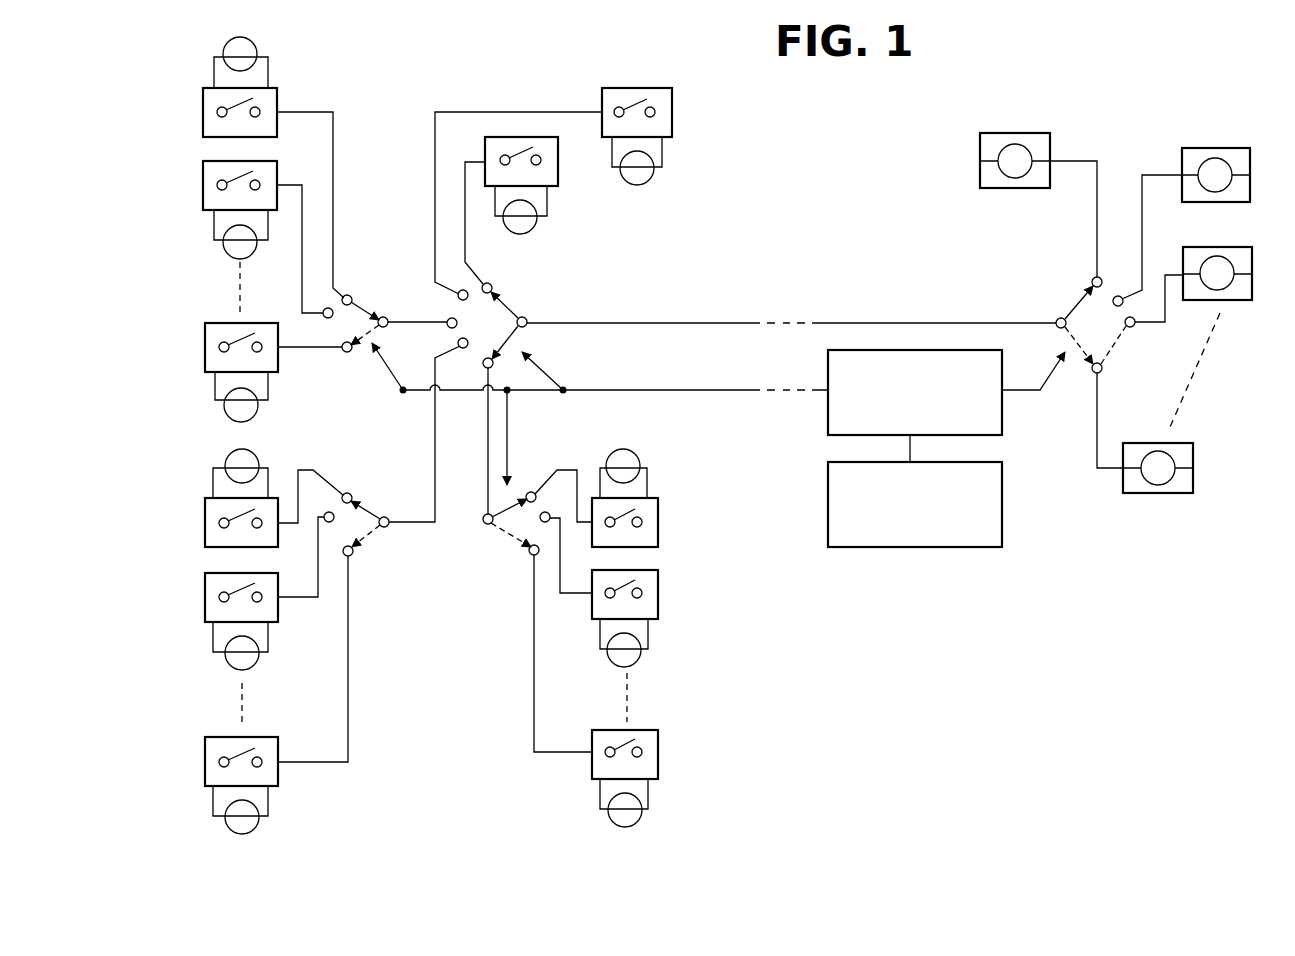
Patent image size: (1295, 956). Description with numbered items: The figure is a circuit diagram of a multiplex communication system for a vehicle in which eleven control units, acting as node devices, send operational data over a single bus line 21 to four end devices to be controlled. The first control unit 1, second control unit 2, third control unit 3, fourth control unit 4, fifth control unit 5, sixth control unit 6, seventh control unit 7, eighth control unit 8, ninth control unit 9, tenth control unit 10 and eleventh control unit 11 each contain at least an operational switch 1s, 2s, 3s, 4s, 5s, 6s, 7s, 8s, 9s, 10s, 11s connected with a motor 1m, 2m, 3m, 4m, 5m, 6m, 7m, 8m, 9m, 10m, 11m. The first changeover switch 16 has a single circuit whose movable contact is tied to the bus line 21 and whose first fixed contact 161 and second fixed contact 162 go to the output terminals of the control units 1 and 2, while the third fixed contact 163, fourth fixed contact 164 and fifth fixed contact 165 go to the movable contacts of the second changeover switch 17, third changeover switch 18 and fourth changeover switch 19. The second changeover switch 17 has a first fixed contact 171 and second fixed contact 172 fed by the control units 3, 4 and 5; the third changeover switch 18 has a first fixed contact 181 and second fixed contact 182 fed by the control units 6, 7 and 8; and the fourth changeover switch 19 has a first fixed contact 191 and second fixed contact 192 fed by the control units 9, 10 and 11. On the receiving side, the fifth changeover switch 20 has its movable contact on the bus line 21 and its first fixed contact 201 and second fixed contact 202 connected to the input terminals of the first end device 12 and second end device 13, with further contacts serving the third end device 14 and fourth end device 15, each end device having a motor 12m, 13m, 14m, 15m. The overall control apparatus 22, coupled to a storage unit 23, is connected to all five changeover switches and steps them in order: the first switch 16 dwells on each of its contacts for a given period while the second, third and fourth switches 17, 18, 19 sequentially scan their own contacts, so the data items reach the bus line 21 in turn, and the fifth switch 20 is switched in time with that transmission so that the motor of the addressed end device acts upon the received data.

The first control unit 1 is at (576, 169).
The operational switch 1s is at (640, 90).
The motor 1m is at (648, 178).
The second control unit 2 is at (521, 202).
The operational switch 2s is at (490, 148).
The motor 2m is at (530, 222).
The third control unit 3 is at (248, 164).
The operational switch 3s is at (210, 116).
The motor 3m is at (226, 53).
The fourth control unit 4 is at (237, 224).
The operational switch 4s is at (210, 190).
The motor 4m is at (226, 246).
The fifth control unit 5 is at (249, 361).
The operational switch 5s is at (210, 362).
The motor 5m is at (228, 412).
The sixth control unit 6 is at (250, 502).
The operational switch 6s is at (210, 516).
The motor 6m is at (226, 462).
The seventh control unit 7 is at (238, 604).
The operational switch 7s is at (208, 612).
The motor 7m is at (228, 660).
The eighth control unit 8 is at (251, 702).
The operational switch 8s is at (210, 752).
The motor 8m is at (228, 822).
The ninth control unit 9 is at (626, 483).
The operational switch 9s is at (636, 507).
The motor 9m is at (630, 460).
The tenth control unit 10 is at (644, 598).
The operational switch 10s is at (640, 600).
The motor 10m is at (640, 655).
The eleventh control unit 11 is at (635, 700).
The operational switch 11s is at (632, 741).
The motor 11m is at (640, 815).
The first end device 12 is at (1008, 186).
The motor 12m is at (1037, 120).
The second end device 13 is at (1186, 198).
The motor 13m is at (1210, 168).
The third end device 14 is at (1210, 285).
The motor 14m is at (1222, 283).
The fourth end device 15 is at (1175, 459).
The motor 15m is at (1163, 482).
The first changeover switch 16 is at (498, 350).
The first fixed contact 161 is at (492, 290).
The second fixed contact 162 is at (458, 297).
The third fixed contact 163 is at (448, 328).
The fourth fixed contact 164 is at (462, 349).
The fifth fixed contact 165 is at (493, 366).
The second changeover switch 17 is at (373, 315).
The first fixed contact 171 is at (342, 300).
The second fixed contact 172 is at (326, 338).
The third changeover switch 18 is at (370, 514).
The first fixed contact 181 is at (350, 492).
The second fixed contact 182 is at (329, 511).
The fourth changeover switch 19 is at (527, 517).
The first fixed contact 191 is at (531, 491).
The second fixed contact 192 is at (548, 512).
The fifth changeover switch 20 is at (1078, 323).
The first fixed contact 201 is at (1092, 282).
The second fixed contact 202 is at (1118, 306).
The bus line 21 is at (687, 322).
The overall control apparatus 22 is at (946, 392).
The storage unit 23 is at (915, 491).